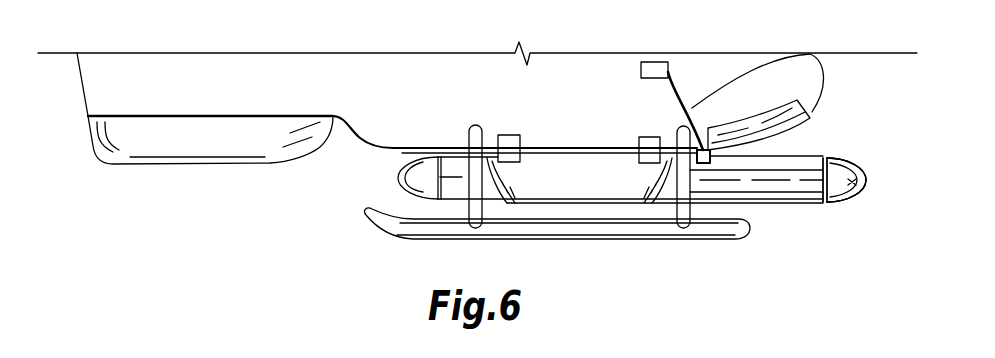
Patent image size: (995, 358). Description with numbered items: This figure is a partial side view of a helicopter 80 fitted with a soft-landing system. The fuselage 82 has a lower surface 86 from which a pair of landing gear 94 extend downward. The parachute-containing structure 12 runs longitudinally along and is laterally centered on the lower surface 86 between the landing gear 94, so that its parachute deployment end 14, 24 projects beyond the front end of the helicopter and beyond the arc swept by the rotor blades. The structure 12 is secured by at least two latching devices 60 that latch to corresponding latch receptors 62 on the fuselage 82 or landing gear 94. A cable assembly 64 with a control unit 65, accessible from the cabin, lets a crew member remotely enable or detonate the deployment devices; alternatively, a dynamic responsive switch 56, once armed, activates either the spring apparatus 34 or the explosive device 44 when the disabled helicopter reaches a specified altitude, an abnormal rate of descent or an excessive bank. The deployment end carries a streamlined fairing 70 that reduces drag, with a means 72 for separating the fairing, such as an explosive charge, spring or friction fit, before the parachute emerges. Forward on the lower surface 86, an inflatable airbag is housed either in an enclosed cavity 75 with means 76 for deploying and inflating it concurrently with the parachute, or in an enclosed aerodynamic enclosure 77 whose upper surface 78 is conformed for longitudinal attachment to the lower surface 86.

The parachute-containing structure 12 is at (451, 190).
The parachute deployment end 14 is at (851, 164).
The parachute deployment end 24 is at (902, 153).
The spring apparatus 34 is at (780, 244).
The explosive device 44 is at (692, 217).
The dynamic responsive switch 56 is at (742, 217).
The latching device 60 is at (477, 64).
The latch receptor 62 is at (500, 137).
The cable assembly 64 is at (736, 68).
The control unit 65 is at (662, 72).
The streamlined fairing 70 is at (403, 180).
The means for separating the fairing 72 is at (827, 204).
The enclosed cavity 75 is at (813, 121).
The means for deploying the airbag 76 is at (810, 122).
The enclosed aerodynamic enclosure 77 is at (130, 147).
The upper surface 78 is at (207, 117).
The helicopter 80 is at (262, 63).
The fuselage 82 is at (363, 124).
The lower surface 86 is at (143, 116).
The landing gear 94 is at (404, 234).